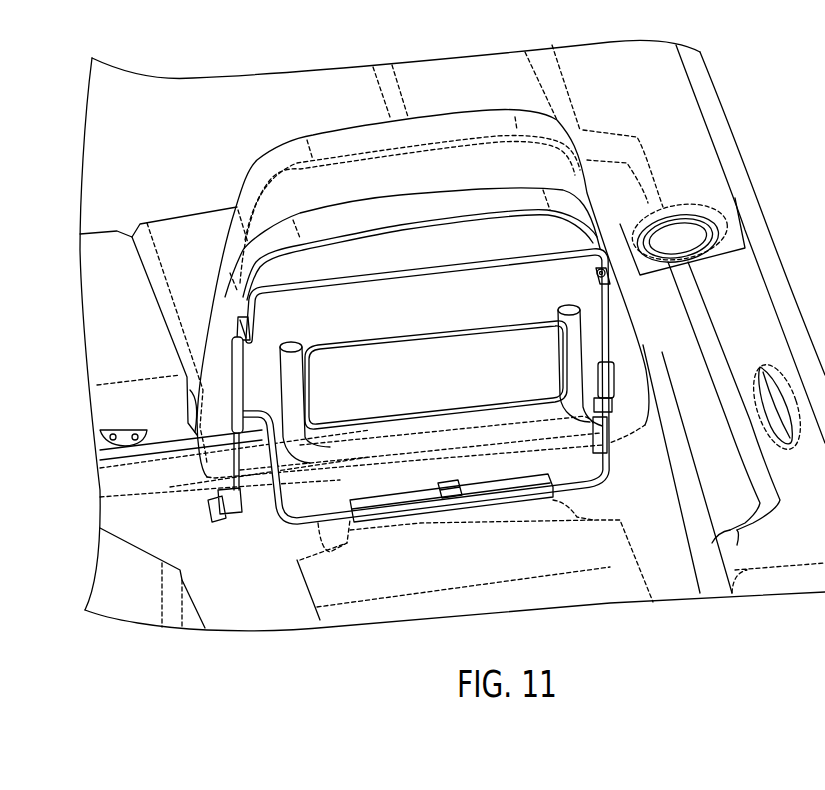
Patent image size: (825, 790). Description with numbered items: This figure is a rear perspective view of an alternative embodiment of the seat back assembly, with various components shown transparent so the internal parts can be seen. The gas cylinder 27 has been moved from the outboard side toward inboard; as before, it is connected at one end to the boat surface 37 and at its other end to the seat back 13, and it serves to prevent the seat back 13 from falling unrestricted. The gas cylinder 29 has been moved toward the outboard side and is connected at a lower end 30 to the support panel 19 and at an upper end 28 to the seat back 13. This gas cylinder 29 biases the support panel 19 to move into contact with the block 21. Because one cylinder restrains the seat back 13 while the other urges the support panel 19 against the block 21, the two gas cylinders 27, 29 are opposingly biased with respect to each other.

The seat back 13 is at (585, 206).
The support panel 19 is at (467, 268).
The block 21 is at (403, 505).
The gas cylinder 27 is at (233, 416).
The upper end 28 is at (612, 278).
The gas cylinder 29 is at (615, 395).
The lower end 30 is at (606, 440).
The boat surface 37 is at (238, 536).